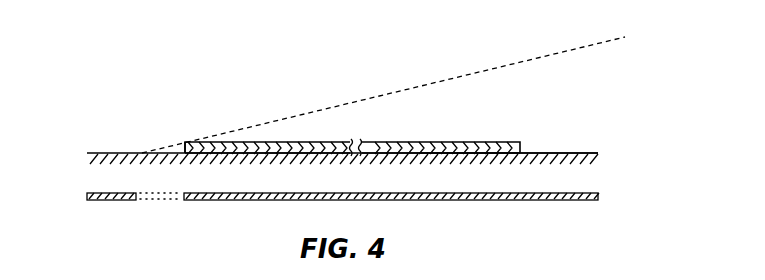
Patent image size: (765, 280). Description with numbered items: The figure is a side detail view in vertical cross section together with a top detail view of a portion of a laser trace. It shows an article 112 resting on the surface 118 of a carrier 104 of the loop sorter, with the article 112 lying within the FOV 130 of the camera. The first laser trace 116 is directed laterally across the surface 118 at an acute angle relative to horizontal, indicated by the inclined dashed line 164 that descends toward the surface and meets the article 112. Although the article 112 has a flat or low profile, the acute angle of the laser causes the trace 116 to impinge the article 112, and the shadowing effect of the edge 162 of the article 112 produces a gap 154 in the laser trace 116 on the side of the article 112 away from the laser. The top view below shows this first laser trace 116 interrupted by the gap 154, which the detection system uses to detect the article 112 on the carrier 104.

The carrier 104 is at (597, 150).
The surface 118 is at (580, 153).
The article 112 is at (480, 142).
The edge 162 is at (184, 142).
The line of sight 164 is at (452, 78).
The FOV 130 is at (355, 68).
The first laser trace 116 is at (612, 196).
The gap 154 is at (167, 203).